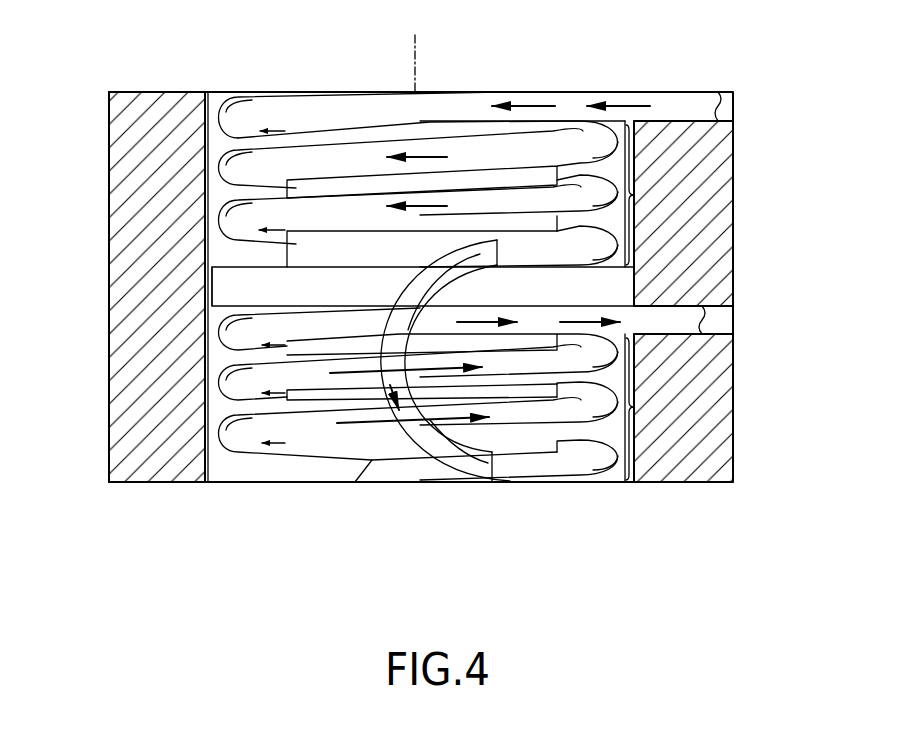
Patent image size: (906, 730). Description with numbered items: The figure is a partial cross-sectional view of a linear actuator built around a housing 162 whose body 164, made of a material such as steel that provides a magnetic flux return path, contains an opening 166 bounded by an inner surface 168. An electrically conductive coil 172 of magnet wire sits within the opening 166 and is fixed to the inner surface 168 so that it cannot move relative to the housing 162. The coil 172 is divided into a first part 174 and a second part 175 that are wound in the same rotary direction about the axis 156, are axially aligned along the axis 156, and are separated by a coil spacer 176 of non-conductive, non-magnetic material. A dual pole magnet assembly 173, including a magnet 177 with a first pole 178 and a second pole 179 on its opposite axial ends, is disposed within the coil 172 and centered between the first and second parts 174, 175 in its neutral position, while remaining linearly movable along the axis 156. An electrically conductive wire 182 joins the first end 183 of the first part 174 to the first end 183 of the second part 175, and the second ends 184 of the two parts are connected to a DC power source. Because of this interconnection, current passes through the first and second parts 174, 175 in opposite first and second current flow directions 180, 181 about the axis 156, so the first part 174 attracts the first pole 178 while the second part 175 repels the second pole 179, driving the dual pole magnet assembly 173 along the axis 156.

The axis 156 is at (415, 51).
The housing 162 is at (140, 84).
The body 164 is at (137, 128).
The opening 166 is at (342, 470).
The inner surface 168 is at (214, 468).
The electrically conductive coil 172 is at (290, 464).
The dual pole magnet assembly 173 is at (204, 300).
The first part 174 is at (634, 195).
The second part 175 is at (634, 407).
The coil spacer 176 is at (284, 255).
The magnet 177 is at (297, 247).
The first pole 178 is at (293, 188).
The second pole 179 is at (548, 388).
The first current flow direction 180 is at (527, 100).
The second current flow direction 181 is at (490, 316).
The electrically conductive wire 182 is at (425, 276).
The first end 183 is at (505, 244).
The second end 184 is at (690, 98).